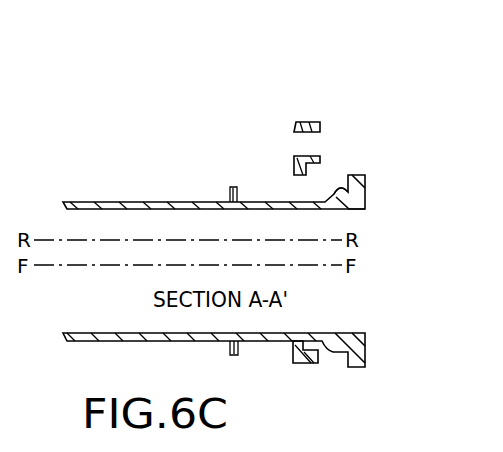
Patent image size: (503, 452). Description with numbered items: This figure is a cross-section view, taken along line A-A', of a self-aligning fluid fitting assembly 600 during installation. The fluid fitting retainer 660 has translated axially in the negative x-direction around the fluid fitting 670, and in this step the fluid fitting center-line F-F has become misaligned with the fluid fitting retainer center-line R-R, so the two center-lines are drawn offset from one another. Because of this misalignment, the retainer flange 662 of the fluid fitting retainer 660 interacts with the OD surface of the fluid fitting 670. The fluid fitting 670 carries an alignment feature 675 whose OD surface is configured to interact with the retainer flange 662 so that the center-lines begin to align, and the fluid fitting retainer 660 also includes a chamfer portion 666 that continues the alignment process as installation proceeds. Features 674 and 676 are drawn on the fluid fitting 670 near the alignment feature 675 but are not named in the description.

The self-aligning fluid fitting assembly 600 is at (196, 140).
The fluid fitting retainer 660 is at (310, 122).
The retainer flange 662 is at (296, 351).
The chamfer portion 666 is at (318, 358).
The fluid fitting 670 is at (103, 202).
The housing corner 674 is at (350, 178).
The alignment feature 675 is at (336, 210).
The rounded protrusion 676 is at (334, 176).